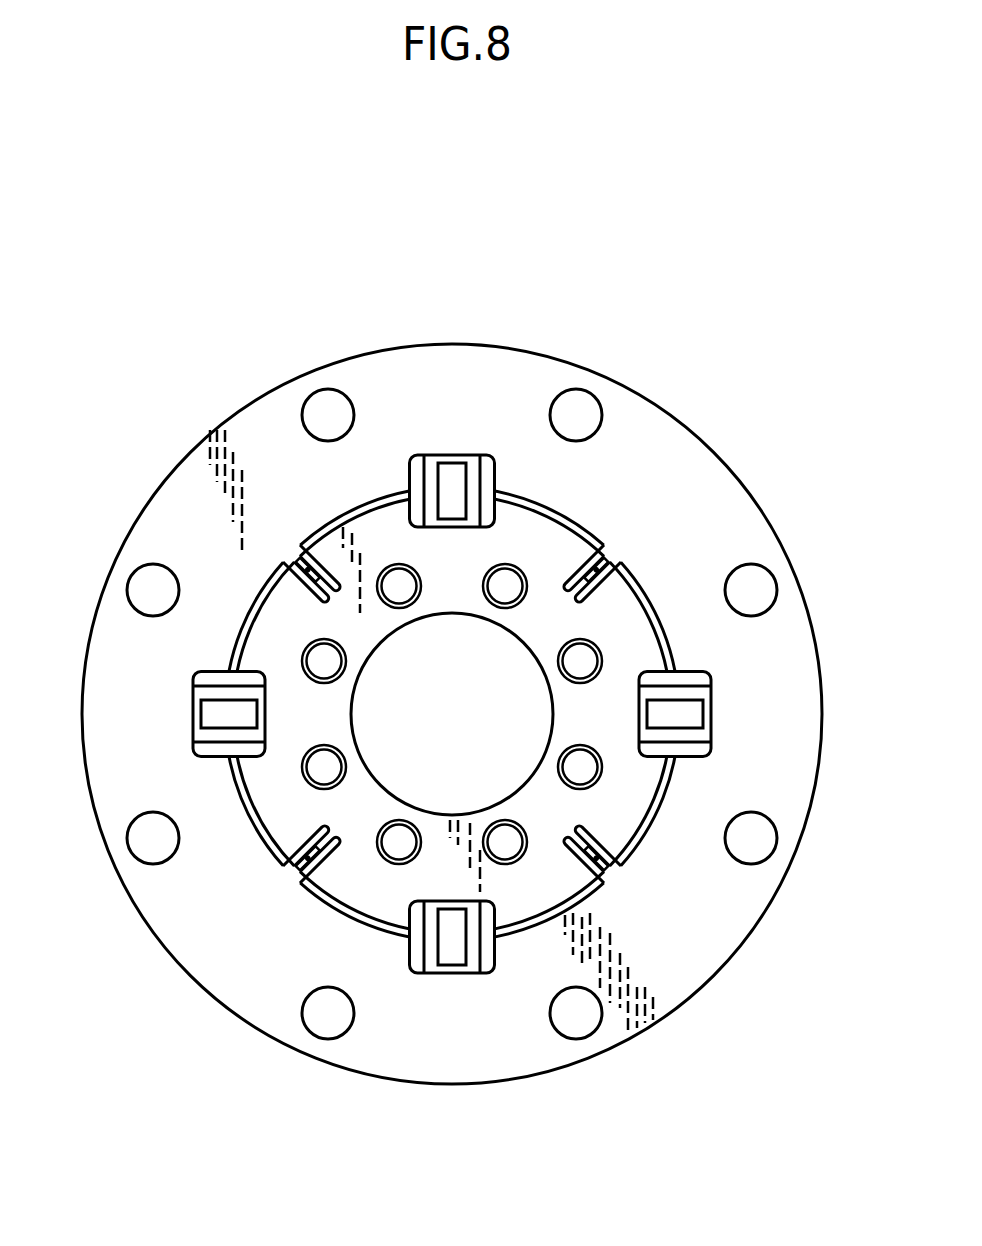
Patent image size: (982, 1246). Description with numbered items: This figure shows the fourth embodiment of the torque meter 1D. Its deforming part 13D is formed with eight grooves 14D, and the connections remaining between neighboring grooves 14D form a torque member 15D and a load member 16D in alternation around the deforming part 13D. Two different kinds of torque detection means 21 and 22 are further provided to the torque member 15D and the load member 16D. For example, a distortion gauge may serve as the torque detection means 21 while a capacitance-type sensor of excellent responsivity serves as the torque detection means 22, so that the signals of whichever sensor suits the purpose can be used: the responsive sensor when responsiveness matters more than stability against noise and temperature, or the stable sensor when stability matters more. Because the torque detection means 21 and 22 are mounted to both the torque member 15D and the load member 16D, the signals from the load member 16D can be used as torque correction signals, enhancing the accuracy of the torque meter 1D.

The torque meter 1D is at (134, 240).
The deforming part 13D is at (832, 246).
The grooves 14D is at (640, 582).
The torque member 15D is at (428, 477).
The load member 16D is at (590, 572).
The torque detection means 21 is at (448, 476).
The torque detection means 22 is at (583, 548).